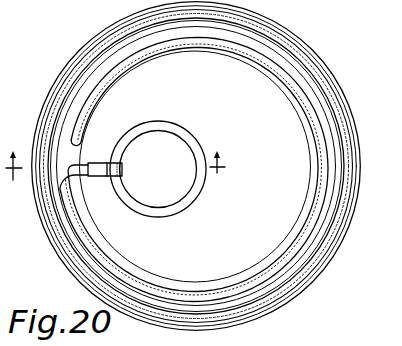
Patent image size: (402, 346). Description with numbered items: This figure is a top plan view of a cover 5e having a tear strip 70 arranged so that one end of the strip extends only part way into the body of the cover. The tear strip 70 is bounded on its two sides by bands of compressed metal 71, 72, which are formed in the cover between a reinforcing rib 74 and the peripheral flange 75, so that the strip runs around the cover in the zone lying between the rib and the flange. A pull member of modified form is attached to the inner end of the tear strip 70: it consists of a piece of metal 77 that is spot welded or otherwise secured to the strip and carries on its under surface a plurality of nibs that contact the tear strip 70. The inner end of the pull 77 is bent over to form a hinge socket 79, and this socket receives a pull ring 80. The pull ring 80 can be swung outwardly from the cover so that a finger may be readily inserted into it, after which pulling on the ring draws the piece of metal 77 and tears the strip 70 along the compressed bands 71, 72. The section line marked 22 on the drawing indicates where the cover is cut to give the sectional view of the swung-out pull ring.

The cover 5e is at (331, 67).
The tear strip 70 is at (331, 124).
The band of compressed metal 71 is at (336, 206).
The band of compressed metal 72 is at (311, 235).
The reinforcing rib 74 is at (270, 263).
The peripheral flange 75 is at (280, 297).
The piece of metal 77 is at (95, 164).
The hinge socket 79 is at (122, 168).
The pull ring 80 is at (191, 142).
The section line 22 is at (130, 177).